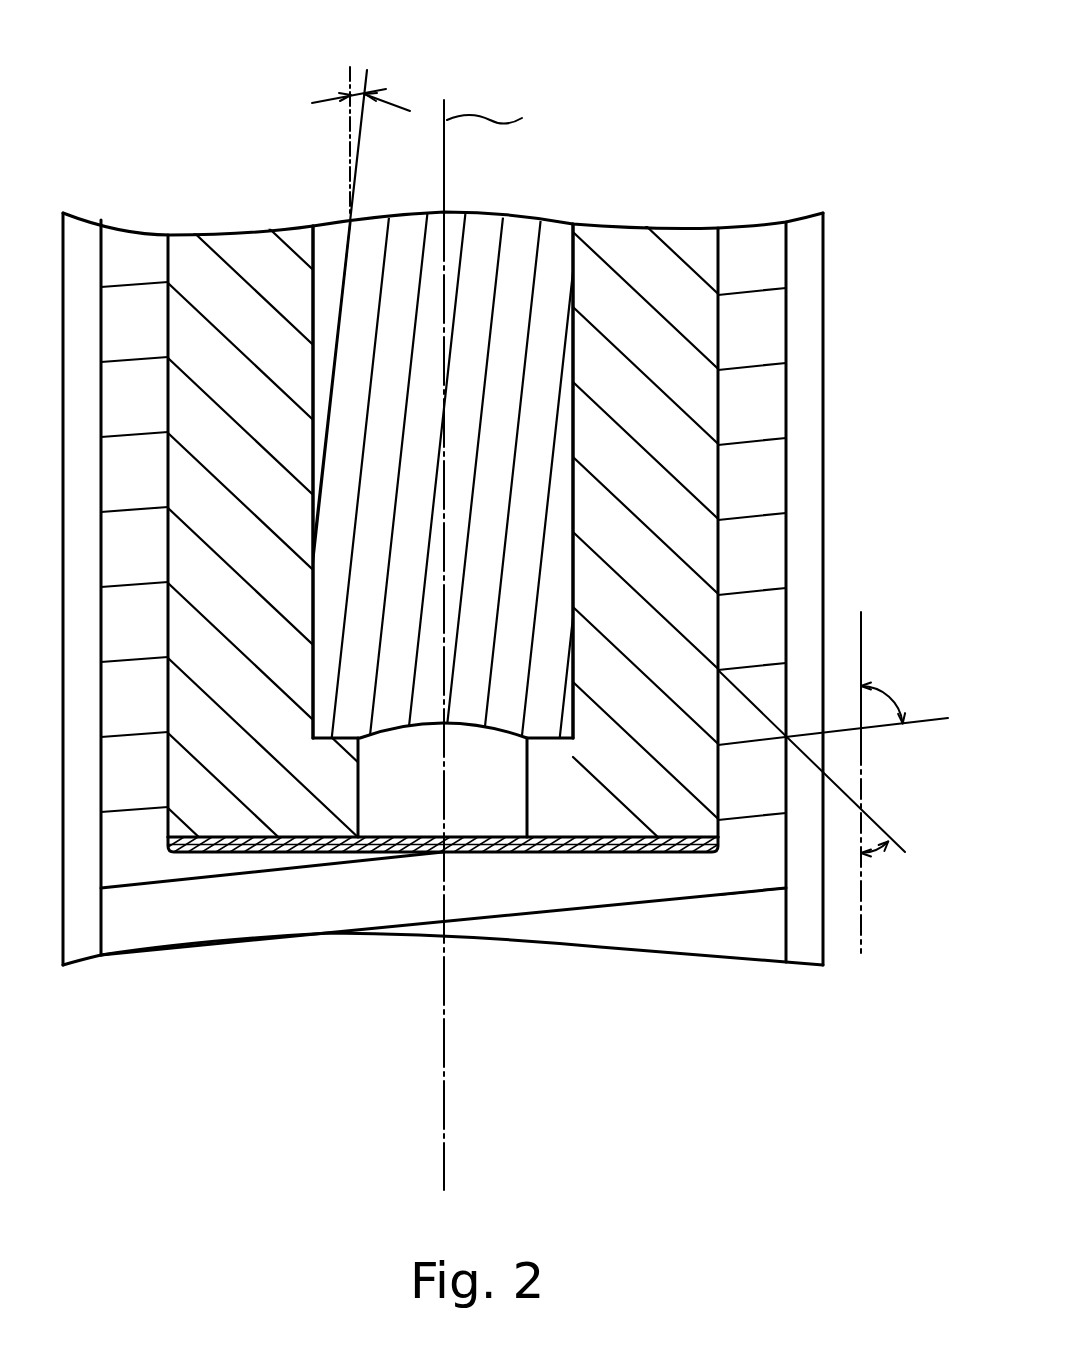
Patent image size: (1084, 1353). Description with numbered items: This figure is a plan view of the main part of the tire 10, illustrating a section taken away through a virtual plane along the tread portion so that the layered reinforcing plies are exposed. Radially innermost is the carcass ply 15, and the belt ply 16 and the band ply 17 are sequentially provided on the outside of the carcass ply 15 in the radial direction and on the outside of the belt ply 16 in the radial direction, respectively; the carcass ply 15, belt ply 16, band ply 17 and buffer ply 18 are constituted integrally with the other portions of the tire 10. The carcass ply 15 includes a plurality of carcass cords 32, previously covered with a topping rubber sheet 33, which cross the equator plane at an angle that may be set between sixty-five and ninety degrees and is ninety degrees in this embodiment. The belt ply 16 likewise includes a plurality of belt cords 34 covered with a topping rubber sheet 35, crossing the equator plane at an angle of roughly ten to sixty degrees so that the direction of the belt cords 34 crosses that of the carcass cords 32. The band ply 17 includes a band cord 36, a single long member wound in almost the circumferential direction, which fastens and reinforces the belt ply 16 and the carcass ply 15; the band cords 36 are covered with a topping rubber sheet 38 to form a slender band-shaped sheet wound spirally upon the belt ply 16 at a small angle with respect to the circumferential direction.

The tire 10 is at (757, 63).
The carcass ply 15 is at (910, 285).
The belt ply 16 is at (762, 95).
The band ply 17 is at (910, 445).
The buffer ply 18 is at (487, 852).
The carcass cord 32 is at (750, 294).
The topping rubber sheet 33 is at (750, 343).
The belt cord 34 is at (663, 240).
The topping rubber sheet 35 is at (624, 247).
The band cord 36 is at (548, 500).
The topping rubber sheet 38 is at (535, 457).